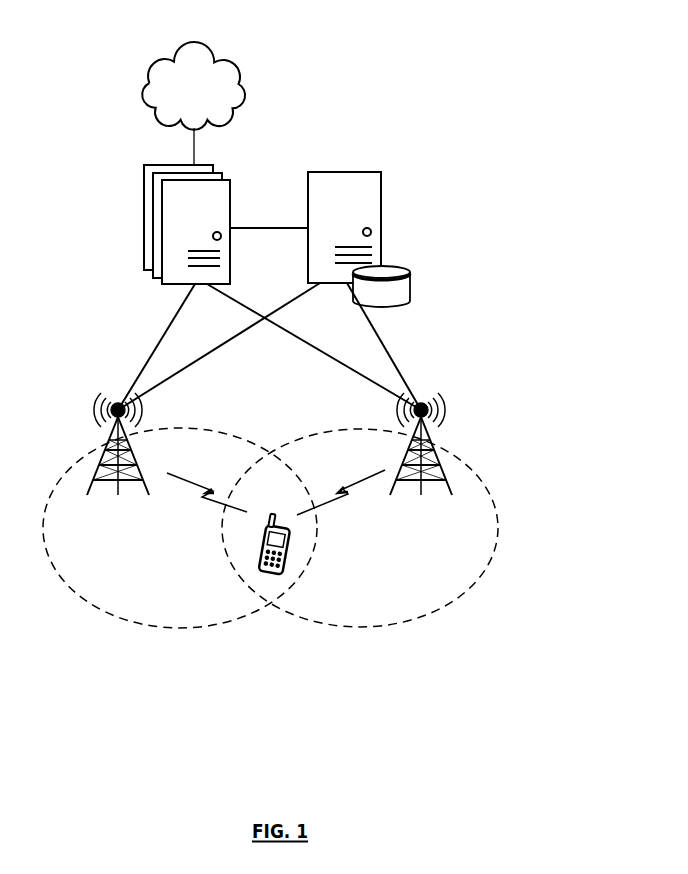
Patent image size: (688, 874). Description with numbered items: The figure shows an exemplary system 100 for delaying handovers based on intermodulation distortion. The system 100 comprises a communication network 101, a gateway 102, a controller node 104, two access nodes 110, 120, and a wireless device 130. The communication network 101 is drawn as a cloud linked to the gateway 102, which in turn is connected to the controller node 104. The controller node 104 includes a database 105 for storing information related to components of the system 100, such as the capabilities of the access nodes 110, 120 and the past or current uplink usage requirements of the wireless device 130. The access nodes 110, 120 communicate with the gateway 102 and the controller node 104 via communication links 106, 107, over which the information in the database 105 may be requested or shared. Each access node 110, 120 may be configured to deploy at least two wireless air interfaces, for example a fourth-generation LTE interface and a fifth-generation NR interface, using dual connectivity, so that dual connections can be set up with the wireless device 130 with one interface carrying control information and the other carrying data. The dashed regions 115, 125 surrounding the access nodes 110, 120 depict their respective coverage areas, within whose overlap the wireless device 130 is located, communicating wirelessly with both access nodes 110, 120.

The system 100 is at (327, 62).
The communication network 101 is at (210, 102).
The gateway 102 is at (144, 202).
The controller node 104 is at (382, 213).
The database 105 is at (412, 283).
The communication link 106 is at (250, 309).
The communication link 107 is at (218, 347).
The access node 110 is at (98, 470).
The first cell coverage area 115 is at (108, 613).
The access node 120 is at (443, 477).
The second cell coverage area 125 is at (435, 611).
The wireless device 130 is at (262, 563).